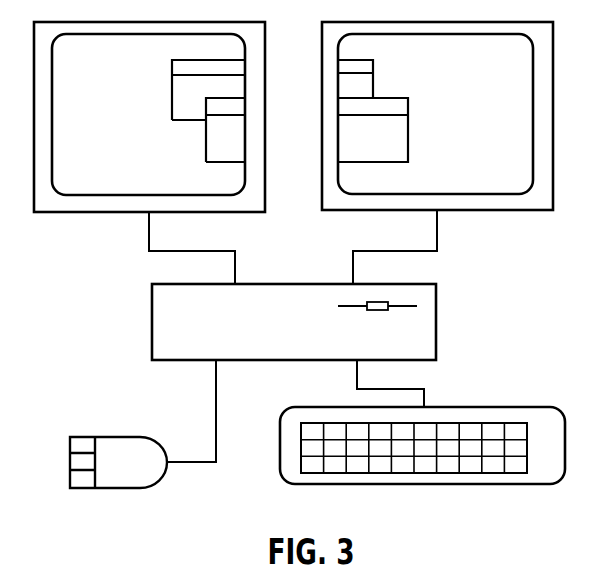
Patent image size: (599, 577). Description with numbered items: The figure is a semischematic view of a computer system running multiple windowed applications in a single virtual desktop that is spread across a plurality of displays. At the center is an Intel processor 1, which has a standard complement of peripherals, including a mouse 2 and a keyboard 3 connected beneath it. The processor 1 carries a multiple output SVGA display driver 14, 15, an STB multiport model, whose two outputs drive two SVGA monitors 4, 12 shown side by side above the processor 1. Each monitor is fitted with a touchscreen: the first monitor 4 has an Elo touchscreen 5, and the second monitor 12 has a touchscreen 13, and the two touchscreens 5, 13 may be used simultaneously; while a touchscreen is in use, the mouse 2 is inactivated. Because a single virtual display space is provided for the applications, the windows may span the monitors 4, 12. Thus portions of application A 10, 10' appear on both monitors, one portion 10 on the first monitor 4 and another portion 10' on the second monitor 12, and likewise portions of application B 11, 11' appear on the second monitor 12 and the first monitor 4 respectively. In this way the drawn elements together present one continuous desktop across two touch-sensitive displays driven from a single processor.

The processor 1 is at (294, 322).
The mouse 2 is at (143, 424).
The keyboard 3 is at (422, 422).
The SVGA monitor 4 is at (149, 117).
The touchscreen 5 is at (148, 114).
The application A 10 is at (208, 90).
The application A 10' is at (355, 79).
The application B 11 is at (373, 130).
The application B 11' is at (226, 130).
The SVGA monitor 12 is at (438, 116).
The touchscreen 13 is at (435, 114).
The multiple output SVGA display driver 14 is at (177, 248).
The multiple output SVGA display driver 15 is at (410, 247).